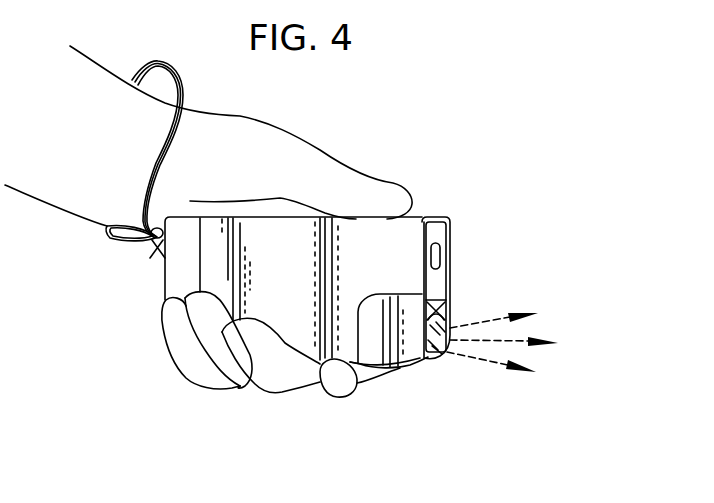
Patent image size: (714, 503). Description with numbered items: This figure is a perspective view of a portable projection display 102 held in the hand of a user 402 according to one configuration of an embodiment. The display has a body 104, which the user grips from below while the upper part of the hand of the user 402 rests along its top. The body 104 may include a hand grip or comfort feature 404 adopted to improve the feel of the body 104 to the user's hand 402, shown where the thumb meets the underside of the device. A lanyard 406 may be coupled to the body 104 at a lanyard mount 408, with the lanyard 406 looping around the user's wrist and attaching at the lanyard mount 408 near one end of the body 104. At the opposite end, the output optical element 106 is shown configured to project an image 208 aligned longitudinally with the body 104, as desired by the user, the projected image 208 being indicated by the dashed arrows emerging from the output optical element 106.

The portable projection display 102 is at (378, 152).
The body 104 is at (416, 218).
The output optical element 106 is at (438, 355).
The image 208 is at (473, 341).
The hand of a user 402 is at (257, 118).
The hand grip or comfort feature 404 is at (358, 383).
The lanyard 406 is at (112, 236).
The lanyard mount 408 is at (153, 244).